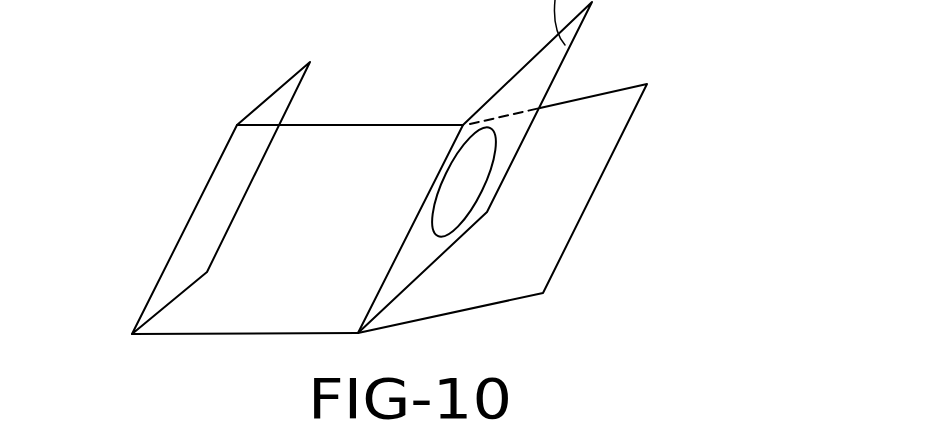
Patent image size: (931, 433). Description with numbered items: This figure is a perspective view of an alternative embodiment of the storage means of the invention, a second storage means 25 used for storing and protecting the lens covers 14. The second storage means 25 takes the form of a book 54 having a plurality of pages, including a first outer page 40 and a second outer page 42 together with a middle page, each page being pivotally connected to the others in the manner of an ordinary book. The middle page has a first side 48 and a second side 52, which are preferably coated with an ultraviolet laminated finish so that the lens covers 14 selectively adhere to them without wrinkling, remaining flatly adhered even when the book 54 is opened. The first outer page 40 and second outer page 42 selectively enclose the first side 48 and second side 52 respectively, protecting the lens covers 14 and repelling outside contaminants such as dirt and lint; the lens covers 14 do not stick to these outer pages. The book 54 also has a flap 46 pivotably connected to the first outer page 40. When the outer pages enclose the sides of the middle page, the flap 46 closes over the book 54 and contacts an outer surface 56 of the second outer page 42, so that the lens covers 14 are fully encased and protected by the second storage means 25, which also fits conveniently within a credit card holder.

The lens covers 14 is at (478, 152).
The second storage means 25 is at (710, 432).
The first outer page 40 is at (363, 137).
The second outer page 42 is at (613, 157).
The flap 46 is at (280, 108).
The first side 48 is at (393, 290).
The second side 52 is at (422, 233).
The book 54 is at (140, 82).
The outer surface 56 is at (547, 223).